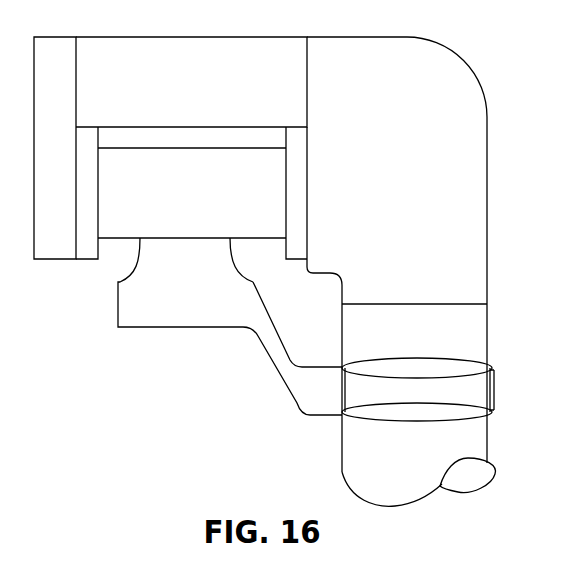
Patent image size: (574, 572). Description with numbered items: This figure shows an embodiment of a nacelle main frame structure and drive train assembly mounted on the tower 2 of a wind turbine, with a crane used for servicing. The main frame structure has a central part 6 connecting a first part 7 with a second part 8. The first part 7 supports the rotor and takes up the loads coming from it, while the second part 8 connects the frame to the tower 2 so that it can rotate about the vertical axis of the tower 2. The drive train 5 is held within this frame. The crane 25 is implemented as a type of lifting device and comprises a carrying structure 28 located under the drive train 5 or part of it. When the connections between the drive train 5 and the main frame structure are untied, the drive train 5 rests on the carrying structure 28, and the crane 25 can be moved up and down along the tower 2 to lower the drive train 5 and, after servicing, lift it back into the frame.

The tower 2 is at (477, 329).
The drive train 5 is at (145, 213).
The central part 6 is at (191, 148).
The first part 7 is at (55, 148).
The second part 8 is at (397, 254).
The crane 25 is at (270, 363).
The carrying structure 28 is at (167, 262).